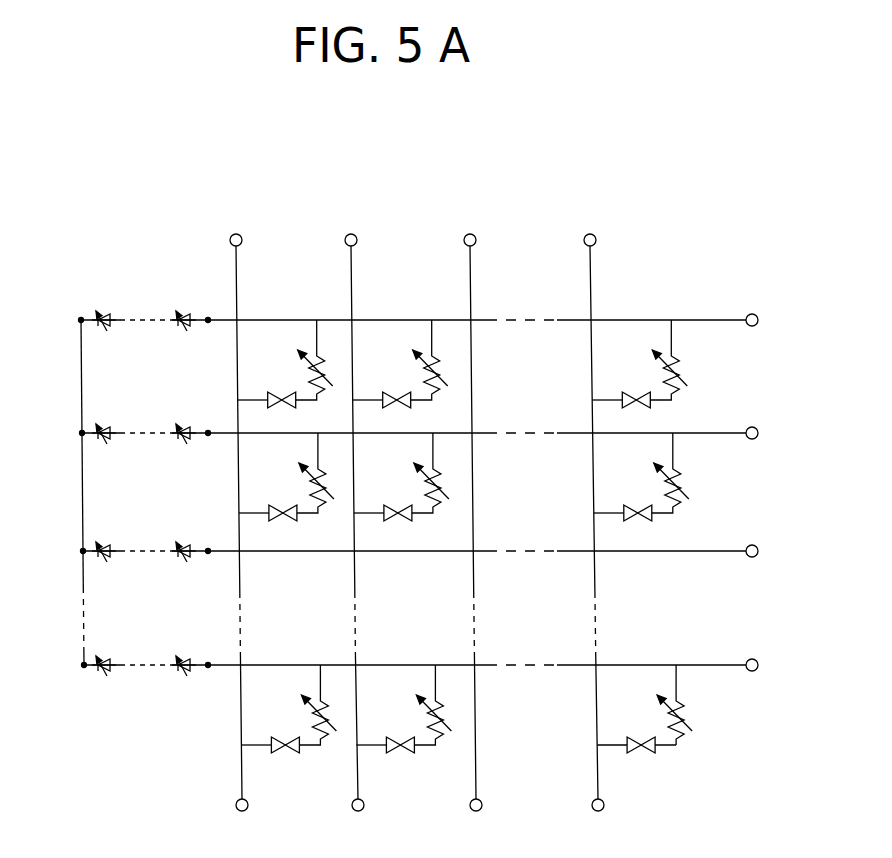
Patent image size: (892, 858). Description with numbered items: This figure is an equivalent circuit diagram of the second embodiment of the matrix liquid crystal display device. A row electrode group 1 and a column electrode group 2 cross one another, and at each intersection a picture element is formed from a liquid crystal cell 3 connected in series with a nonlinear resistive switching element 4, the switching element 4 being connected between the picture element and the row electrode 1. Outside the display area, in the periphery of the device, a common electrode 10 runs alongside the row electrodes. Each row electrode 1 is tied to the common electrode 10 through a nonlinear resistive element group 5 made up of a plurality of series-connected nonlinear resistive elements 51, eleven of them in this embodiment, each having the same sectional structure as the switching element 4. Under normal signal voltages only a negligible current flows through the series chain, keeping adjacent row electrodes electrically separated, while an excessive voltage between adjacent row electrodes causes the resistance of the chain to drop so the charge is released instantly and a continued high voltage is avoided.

The row electrode 1 is at (772, 672).
The column electrode group 2 is at (212, 221).
The liquid crystal cell 3 is at (641, 755).
The nonlinear resistive switching element 4 is at (696, 718).
The nonlinear resistive element group 5 is at (150, 672).
The nonlinear resistive element 51 is at (199, 650).
The common electrode 10 is at (79, 352).